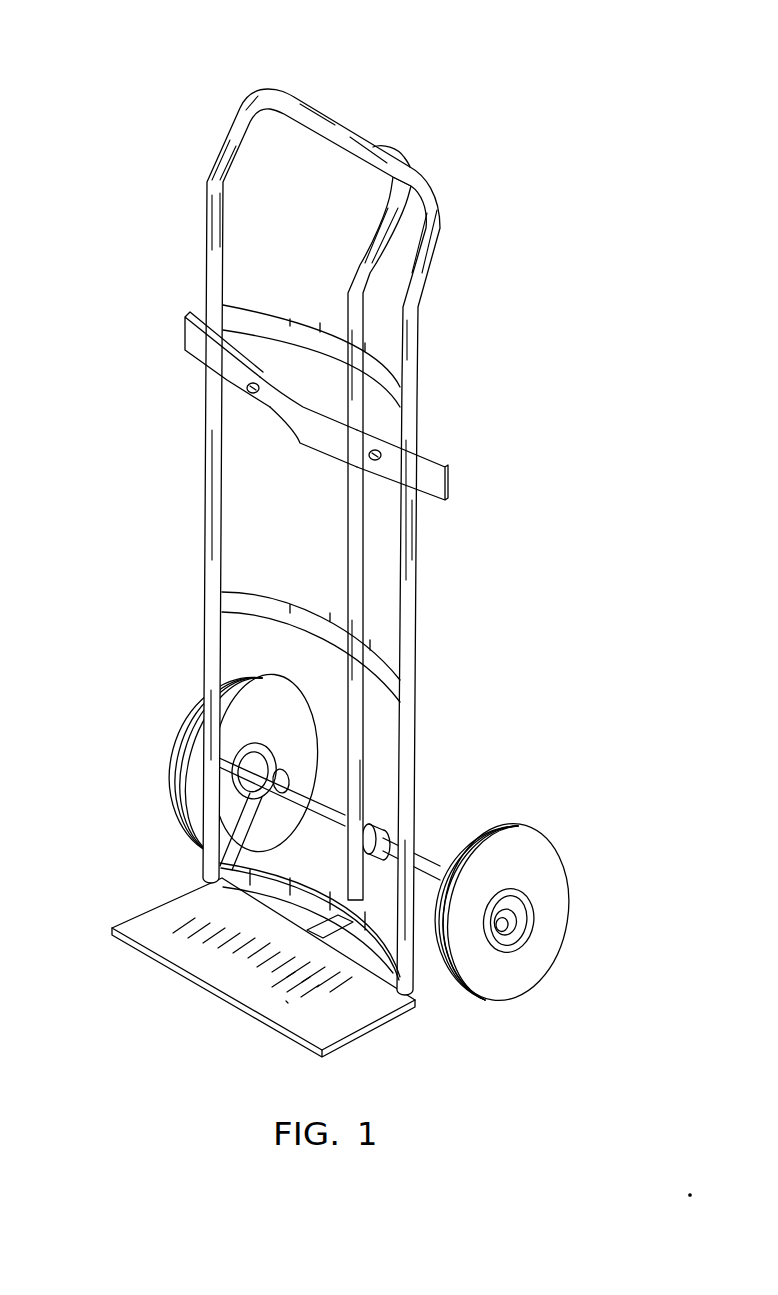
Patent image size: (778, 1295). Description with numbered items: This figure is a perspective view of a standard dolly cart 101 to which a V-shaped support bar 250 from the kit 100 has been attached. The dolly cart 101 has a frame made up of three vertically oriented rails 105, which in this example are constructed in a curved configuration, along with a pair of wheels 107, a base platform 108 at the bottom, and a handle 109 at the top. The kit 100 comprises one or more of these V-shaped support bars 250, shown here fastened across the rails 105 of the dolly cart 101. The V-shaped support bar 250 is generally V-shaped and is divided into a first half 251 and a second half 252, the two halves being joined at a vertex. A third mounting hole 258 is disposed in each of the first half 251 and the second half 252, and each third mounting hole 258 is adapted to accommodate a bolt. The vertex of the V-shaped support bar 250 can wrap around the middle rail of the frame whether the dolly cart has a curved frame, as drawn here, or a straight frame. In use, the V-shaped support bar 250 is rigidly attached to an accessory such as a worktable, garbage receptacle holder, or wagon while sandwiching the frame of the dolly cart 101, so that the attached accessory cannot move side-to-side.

The kit 100 is at (349, 611).
The dolly cart 101 is at (413, 625).
The rails 105 is at (355, 800).
The wheels 107 is at (168, 783).
The base platform 108 is at (250, 957).
The handle 109 is at (382, 147).
The V-shaped support bar 250 is at (331, 314).
The first half 251 is at (237, 372).
The second half 252 is at (335, 432).
The third mounting hole 258 is at (383, 450).